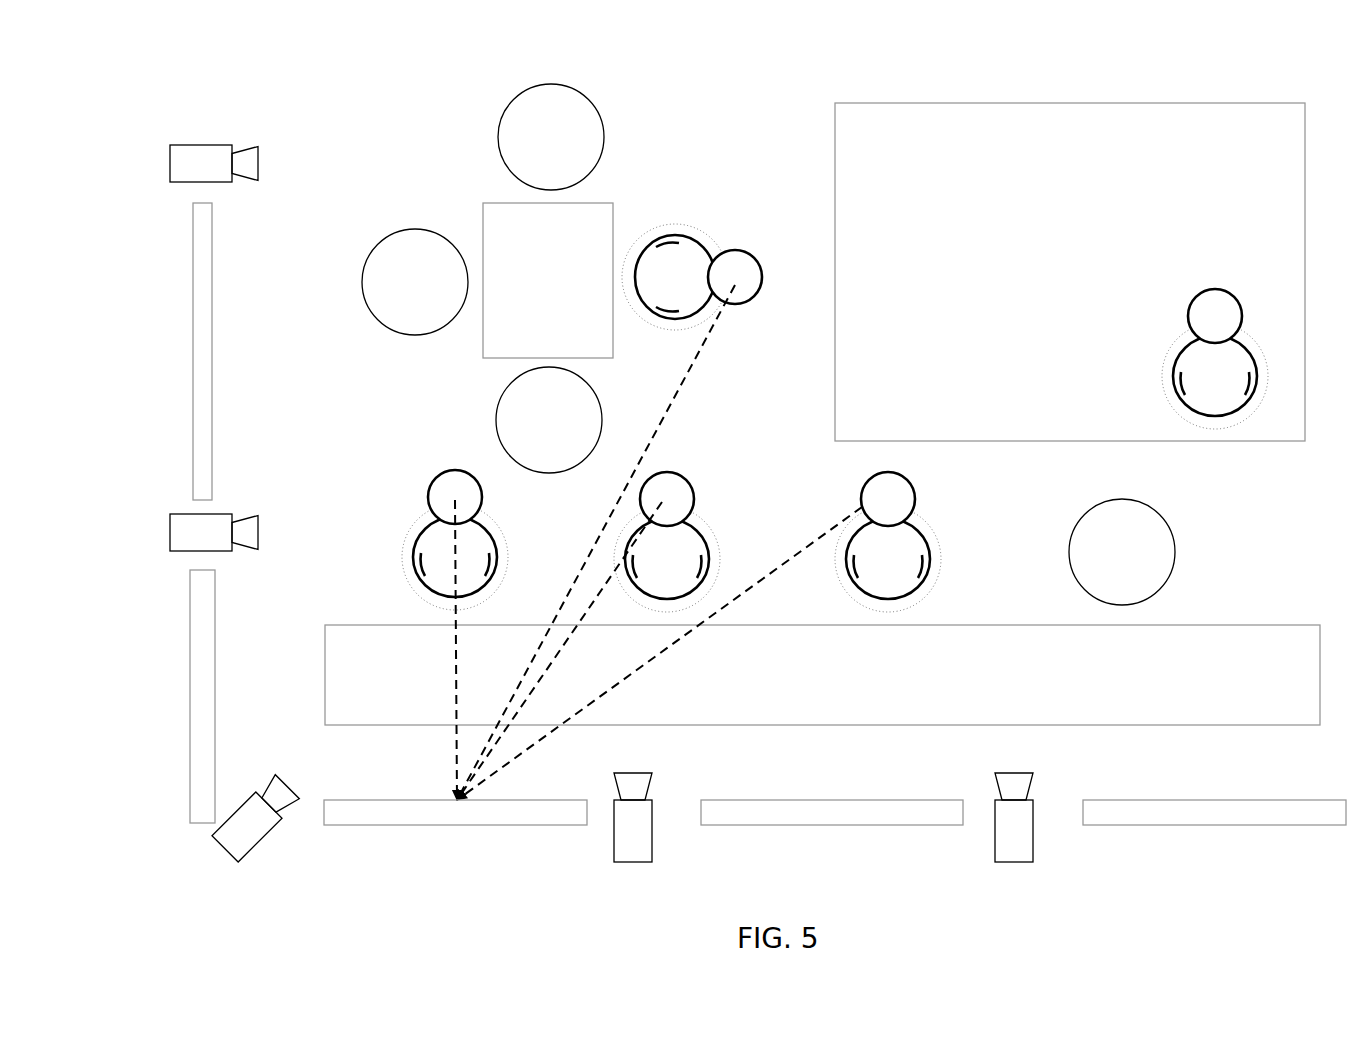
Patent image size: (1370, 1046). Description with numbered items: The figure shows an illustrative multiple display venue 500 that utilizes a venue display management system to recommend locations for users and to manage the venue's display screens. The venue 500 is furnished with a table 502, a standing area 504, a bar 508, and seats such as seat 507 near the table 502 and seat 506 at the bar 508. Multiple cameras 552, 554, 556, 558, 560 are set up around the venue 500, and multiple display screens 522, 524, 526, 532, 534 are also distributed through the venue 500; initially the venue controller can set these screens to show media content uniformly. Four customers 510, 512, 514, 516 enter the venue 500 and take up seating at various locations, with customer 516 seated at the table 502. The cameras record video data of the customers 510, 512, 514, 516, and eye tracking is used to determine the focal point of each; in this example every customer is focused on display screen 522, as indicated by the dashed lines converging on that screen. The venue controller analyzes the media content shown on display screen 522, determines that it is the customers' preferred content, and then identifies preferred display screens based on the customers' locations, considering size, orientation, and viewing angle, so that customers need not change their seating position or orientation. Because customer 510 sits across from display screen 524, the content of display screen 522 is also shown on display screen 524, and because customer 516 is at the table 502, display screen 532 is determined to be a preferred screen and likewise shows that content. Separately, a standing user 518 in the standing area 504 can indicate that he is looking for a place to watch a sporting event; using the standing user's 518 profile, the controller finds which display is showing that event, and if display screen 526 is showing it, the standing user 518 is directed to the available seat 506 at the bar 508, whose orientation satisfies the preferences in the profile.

The multiple display venue 500 is at (378, 160).
The table 502 is at (527, 307).
The standing area 504 is at (1046, 241).
The seat 506 is at (1101, 586).
The seat 507 is at (530, 171).
The bar 508 is at (869, 696).
The customer 510 is at (923, 530).
The customer 512 is at (697, 527).
The customer 514 is at (483, 535).
The customer 516 is at (693, 235).
The standing user 518 is at (1250, 345).
The display screen 522 is at (458, 823).
The display screen 524 is at (832, 823).
The display screen 526 is at (1215, 823).
The display screen 532 is at (192, 352).
The display screen 534 is at (190, 697).
The camera 552 is at (202, 145).
The camera 554 is at (170, 532).
The camera 556 is at (225, 850).
The camera 558 is at (614, 832).
The camera 560 is at (995, 832).